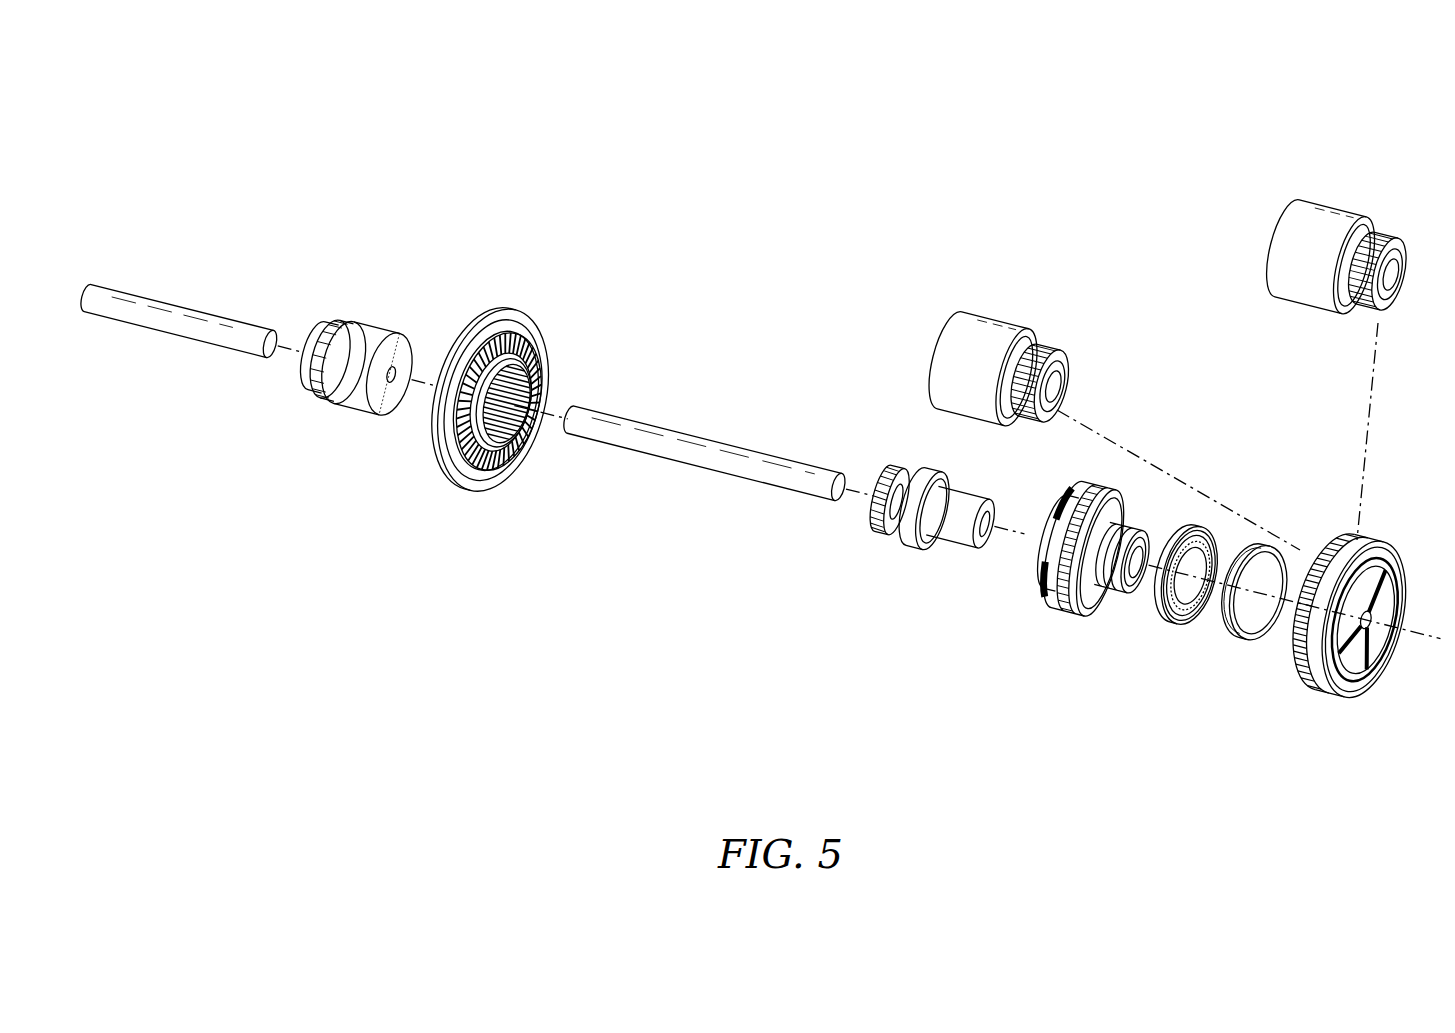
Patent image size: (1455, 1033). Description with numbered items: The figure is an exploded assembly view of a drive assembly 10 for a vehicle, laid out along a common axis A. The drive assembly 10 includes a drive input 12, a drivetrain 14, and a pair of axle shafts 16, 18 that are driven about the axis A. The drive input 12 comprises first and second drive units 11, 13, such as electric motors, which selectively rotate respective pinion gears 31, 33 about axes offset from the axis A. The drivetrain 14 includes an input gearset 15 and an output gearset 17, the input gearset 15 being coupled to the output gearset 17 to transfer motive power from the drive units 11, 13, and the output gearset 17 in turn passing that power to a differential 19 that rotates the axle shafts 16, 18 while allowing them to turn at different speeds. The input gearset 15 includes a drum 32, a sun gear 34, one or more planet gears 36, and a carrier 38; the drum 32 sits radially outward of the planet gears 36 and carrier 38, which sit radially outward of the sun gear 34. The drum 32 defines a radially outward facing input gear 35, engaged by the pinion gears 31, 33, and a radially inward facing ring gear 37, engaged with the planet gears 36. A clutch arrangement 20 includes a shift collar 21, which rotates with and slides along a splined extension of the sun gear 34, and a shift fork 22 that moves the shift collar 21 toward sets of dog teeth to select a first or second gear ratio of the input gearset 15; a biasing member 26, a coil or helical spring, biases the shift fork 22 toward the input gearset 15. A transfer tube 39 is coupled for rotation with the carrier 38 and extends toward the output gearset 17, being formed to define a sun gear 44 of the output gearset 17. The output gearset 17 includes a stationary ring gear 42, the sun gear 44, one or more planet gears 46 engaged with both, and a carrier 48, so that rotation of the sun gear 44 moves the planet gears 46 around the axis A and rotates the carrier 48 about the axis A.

The drive assembly 10 is at (528, 147).
The first drive unit 11 is at (1110, 388).
The drive input 12 is at (1186, 317).
The second drive unit 13 is at (1354, 330).
The drivetrain 14 is at (459, 402).
The input gearset 15 is at (1350, 716).
The axle shaft 16 is at (697, 425).
The output gearset 17 is at (458, 492).
The axle shaft 18 is at (165, 299).
The differential 19 is at (360, 316).
The clutch arrangement 20 is at (1169, 644).
The shift collar 21 is at (1067, 575).
The shift fork 22 is at (1170, 628).
The biasing member 26 is at (1240, 645).
The pinion gear 31 is at (1053, 340).
The drum 32 is at (1347, 712).
The pinion gear 33 is at (1391, 223).
The sun gear 34 is at (1107, 617).
The input gear 35 is at (1315, 698).
The planet gears 36 is at (1034, 594).
The ring gear 37 is at (1388, 675).
The carrier 38 is at (1032, 566).
The transfer tube 39 is at (947, 548).
The stationary ring gear 42 is at (440, 469).
The sun gear 44 is at (891, 537).
The planet gears 46 is at (528, 396).
The carrier 48 is at (534, 451).
The axis A is at (852, 486).